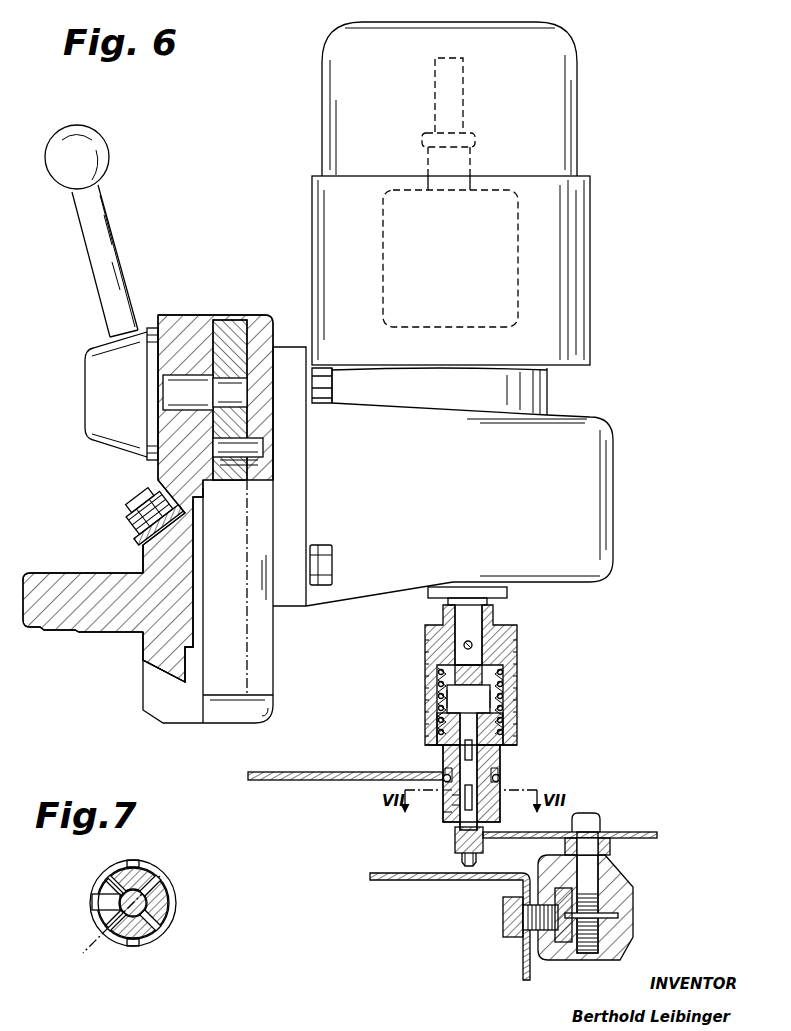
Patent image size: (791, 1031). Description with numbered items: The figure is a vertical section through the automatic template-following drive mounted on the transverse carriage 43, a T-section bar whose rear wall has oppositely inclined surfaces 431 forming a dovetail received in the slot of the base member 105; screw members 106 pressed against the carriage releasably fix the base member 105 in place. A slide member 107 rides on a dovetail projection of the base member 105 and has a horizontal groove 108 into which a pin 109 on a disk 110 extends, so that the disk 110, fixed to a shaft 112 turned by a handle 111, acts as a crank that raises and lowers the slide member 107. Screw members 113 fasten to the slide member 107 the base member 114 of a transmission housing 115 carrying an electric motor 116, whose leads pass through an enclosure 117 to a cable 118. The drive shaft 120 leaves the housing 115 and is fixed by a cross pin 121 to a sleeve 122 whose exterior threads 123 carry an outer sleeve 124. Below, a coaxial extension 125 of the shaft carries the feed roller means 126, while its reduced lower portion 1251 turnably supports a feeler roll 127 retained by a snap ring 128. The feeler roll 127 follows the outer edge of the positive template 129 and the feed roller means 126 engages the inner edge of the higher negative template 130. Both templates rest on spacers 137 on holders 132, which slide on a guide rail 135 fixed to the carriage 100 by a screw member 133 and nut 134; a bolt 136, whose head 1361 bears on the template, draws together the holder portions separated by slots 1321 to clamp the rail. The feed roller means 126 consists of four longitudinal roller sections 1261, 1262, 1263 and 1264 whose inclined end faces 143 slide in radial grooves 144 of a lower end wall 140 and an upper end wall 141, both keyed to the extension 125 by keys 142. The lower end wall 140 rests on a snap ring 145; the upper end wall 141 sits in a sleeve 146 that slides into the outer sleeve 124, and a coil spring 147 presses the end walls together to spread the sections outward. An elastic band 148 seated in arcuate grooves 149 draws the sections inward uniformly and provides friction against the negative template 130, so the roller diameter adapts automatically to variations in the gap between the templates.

In FIG. 6, the transverse carriage 43 is at (141, 643).
In FIG. 6, the inclined surfaces 431 is at (152, 540).
In FIG. 6, the carriage 100 is at (398, 880).
In FIG. 6, the base member 105 is at (182, 323).
In FIG. 6, the screw members 106 is at (135, 495).
In FIG. 6, the slide member 107 is at (262, 644).
In FIG. 6, the horizontal groove 108 is at (264, 447).
In FIG. 6, the pin 109 is at (228, 460).
In FIG. 6, the disk 110 is at (230, 325).
In FIG. 6, the handle 111 is at (107, 244).
In FIG. 6, the shaft 112 is at (187, 400).
In FIG. 6, the screw members 113 is at (322, 560).
In FIG. 6, the base member 114 is at (298, 509).
In FIG. 6, the transmission housing 115 is at (598, 472).
In FIG. 6, the electric motor 116 is at (566, 297).
In FIG. 6, the enclosure 117 is at (514, 229).
In FIG. 6, the cable 118 is at (460, 94).
In FIG. 6, the drive shaft 120 is at (455, 618).
In FIG. 6, the cross pin 121 is at (463, 646).
In FIG. 6, the sleeve 122 is at (508, 648).
In FIG. 6, the exterior threads 123 is at (500, 620).
In FIG. 6, the outer sleeve 124 is at (436, 690).
In FIG. 6, the shaft extension 125 is at (478, 725).
In FIG. 7, the shaft extension 125 is at (136, 932).
In FIG. 6, the reduced-diameter portion 1251 is at (469, 868).
In FIG. 6, the feed roller means 126 is at (506, 764).
In FIG. 6, the roller section 1261 is at (446, 770).
In FIG. 7, the roller section 1261 is at (97, 930).
In FIG. 7, the roller section 1262 is at (147, 932).
In FIG. 6, the roller section 1263 is at (492, 783).
In FIG. 7, the roller section 1263 is at (170, 920).
In FIG. 7, the roller section 1264 is at (149, 880).
In FIG. 6, the feeler roll 127 is at (460, 856).
In FIG. 6, the snap ring 128 is at (481, 855).
In FIG. 6, the positive template 129 is at (643, 831).
In FIG. 6, the negative template 130 is at (315, 781).
In FIG. 6, the holders 132 is at (614, 936).
In FIG. 6, the horizontal slots 1321 is at (620, 908).
In FIG. 6, the screw member 133 is at (506, 915).
In FIG. 6, the nut 134 is at (518, 938).
In FIG. 6, the guide rail 135 is at (563, 943).
In FIG. 6, the bolt 136 is at (589, 953).
In FIG. 6, the bolt head 1361 is at (590, 822).
In FIG. 6, the spacer 137 is at (612, 848).
In FIG. 6, the lower end wall 140 is at (447, 812).
In FIG. 7, the lower end wall 140 is at (97, 887).
In FIG. 6, the upper end wall 141 is at (428, 738).
In FIG. 6, the keys 142 is at (468, 699).
In FIG. 6, the end faces 143 is at (495, 798).
In FIG. 6, the radial grooves 144 is at (457, 799).
In FIG. 7, the radial grooves 144 is at (95, 906).
In FIG. 6, the snap ring 145 is at (459, 822).
In FIG. 6, the sleeve 146 is at (505, 750).
In FIG. 6, the coil spring 147 is at (497, 697).
In FIG. 6, the elastic band 148 is at (500, 776).
In FIG. 7, the arcuate groove 149 is at (163, 884).